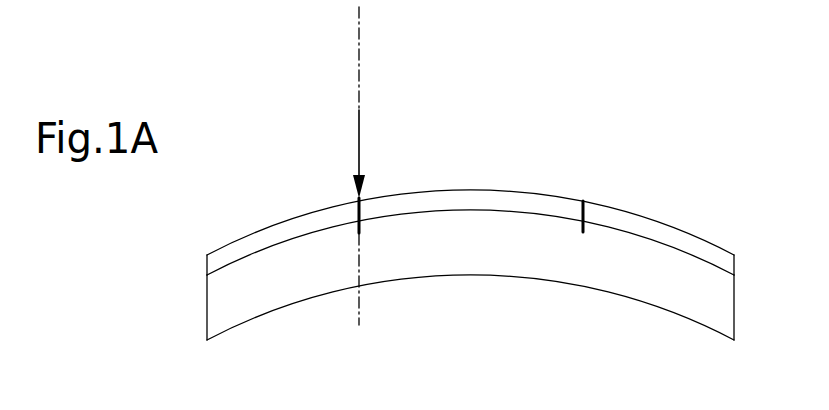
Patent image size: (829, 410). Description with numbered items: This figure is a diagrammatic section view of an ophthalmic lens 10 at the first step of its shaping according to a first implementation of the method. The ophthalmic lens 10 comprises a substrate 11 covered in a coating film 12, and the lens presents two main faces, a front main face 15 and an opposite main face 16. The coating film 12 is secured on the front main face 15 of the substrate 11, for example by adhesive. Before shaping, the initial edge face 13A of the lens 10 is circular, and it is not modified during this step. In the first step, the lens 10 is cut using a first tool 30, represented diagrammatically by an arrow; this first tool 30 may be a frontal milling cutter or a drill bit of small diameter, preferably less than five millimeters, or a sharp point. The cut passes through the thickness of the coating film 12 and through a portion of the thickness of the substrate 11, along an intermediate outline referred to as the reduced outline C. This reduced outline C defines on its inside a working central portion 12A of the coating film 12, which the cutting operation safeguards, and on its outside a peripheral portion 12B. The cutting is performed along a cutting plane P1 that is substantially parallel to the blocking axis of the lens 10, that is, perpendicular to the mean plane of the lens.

The ophthalmic lens 10 is at (702, 162).
The substrate 11 is at (637, 283).
The coating film 12 is at (540, 202).
The working central portion 12A is at (432, 200).
The peripheral portion 12B is at (270, 237).
The initial edge face 13A is at (207, 297).
The front main face 15 is at (687, 248).
The main face 16 is at (555, 283).
The first tool 30 is at (359, 118).
The cutting plane P1 is at (359, 33).
The reduced outline C is at (585, 212).